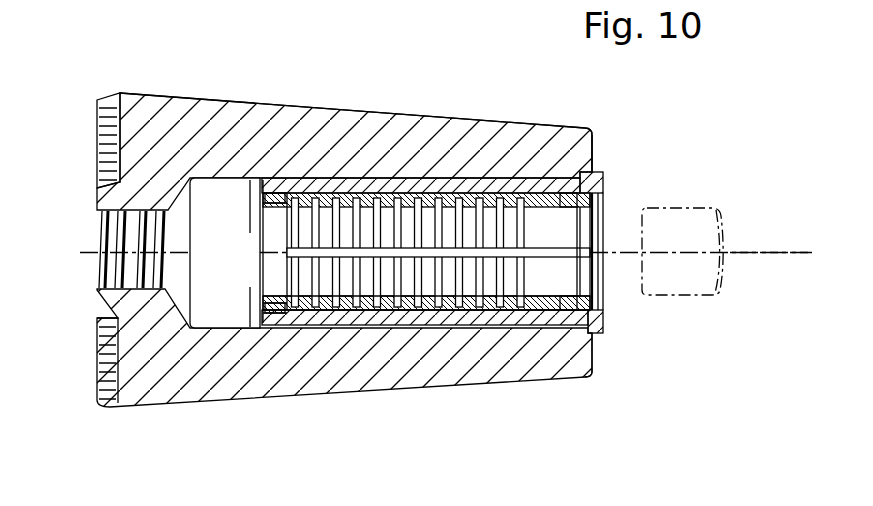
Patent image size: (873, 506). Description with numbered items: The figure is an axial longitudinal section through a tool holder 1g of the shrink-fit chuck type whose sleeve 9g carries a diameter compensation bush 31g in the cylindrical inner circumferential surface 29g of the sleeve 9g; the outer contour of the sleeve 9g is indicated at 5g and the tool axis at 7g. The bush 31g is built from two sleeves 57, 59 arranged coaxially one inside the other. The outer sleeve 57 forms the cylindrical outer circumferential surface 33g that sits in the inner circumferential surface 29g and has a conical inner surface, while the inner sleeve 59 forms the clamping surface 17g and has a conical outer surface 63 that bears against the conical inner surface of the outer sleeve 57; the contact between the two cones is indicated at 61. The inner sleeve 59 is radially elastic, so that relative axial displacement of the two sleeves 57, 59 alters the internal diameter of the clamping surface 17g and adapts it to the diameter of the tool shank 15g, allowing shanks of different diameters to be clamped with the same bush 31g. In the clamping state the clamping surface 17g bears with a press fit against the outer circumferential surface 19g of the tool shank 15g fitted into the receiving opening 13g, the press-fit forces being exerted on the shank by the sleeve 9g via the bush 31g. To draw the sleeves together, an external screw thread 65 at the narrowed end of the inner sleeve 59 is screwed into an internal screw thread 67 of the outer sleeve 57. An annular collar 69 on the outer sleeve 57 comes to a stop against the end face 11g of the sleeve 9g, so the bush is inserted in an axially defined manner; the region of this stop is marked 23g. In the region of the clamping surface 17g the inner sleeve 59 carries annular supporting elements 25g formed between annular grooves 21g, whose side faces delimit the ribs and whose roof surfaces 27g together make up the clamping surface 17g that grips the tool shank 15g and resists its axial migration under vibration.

The tool holder 1g is at (152, 78).
The sleeve 9g is at (240, 110).
The outer surface of housing 5g is at (533, 116).
The diameter compensation bush 31g is at (481, 175).
The cylindrical outer circumferential surface 33g is at (383, 196).
The conical outer surface 63 is at (303, 177).
The contact disc 61 is at (323, 177).
The inner sleeve 59 is at (355, 177).
The outer sleeve 57 is at (410, 177).
The cylindrical inner circumferential surface 29g is at (447, 177).
The annular grooves 21g is at (490, 298).
The clamping surface 17g is at (442, 284).
The spacer 27g is at (349, 298).
The annular supporting elements 25g is at (367, 297).
The receiving opening 13g is at (578, 272).
The annular collar 69 is at (603, 173).
The internal screw thread 67 is at (604, 306).
The external screw thread 65 is at (600, 335).
The end face of housing 23g is at (543, 177).
The end face 11g is at (596, 149).
The tool shank 15g is at (695, 197).
The outer circumferential surface 19g is at (707, 299).
The axis 7g is at (763, 248).